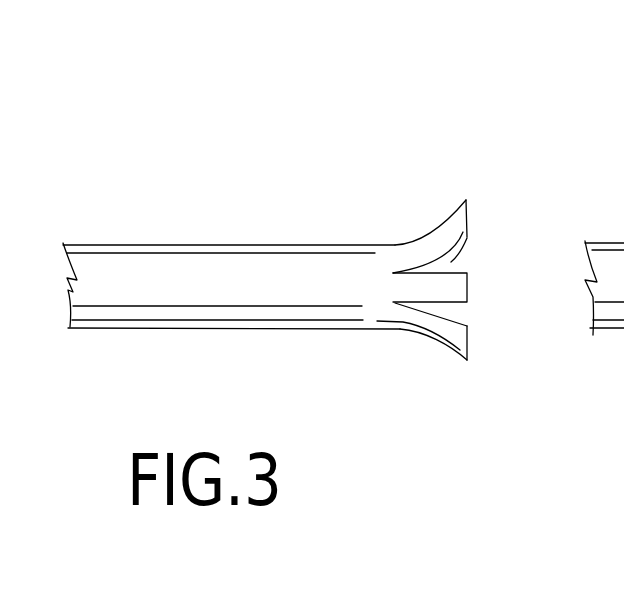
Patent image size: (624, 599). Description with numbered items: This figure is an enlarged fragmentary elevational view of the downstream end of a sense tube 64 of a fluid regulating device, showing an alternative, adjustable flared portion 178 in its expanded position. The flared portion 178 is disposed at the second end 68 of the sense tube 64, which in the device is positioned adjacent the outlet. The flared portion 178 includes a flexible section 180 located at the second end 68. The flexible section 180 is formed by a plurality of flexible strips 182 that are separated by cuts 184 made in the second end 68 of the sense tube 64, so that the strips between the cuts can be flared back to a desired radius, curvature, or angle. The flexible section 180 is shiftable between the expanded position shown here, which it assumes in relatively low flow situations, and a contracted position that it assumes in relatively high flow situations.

The sense tube 64 is at (195, 246).
The second end 68 is at (429, 229).
The flared portion 178 is at (465, 361).
The flexible section 180 is at (431, 360).
The flexible strips 182 is at (471, 206).
The cuts 184 is at (468, 272).